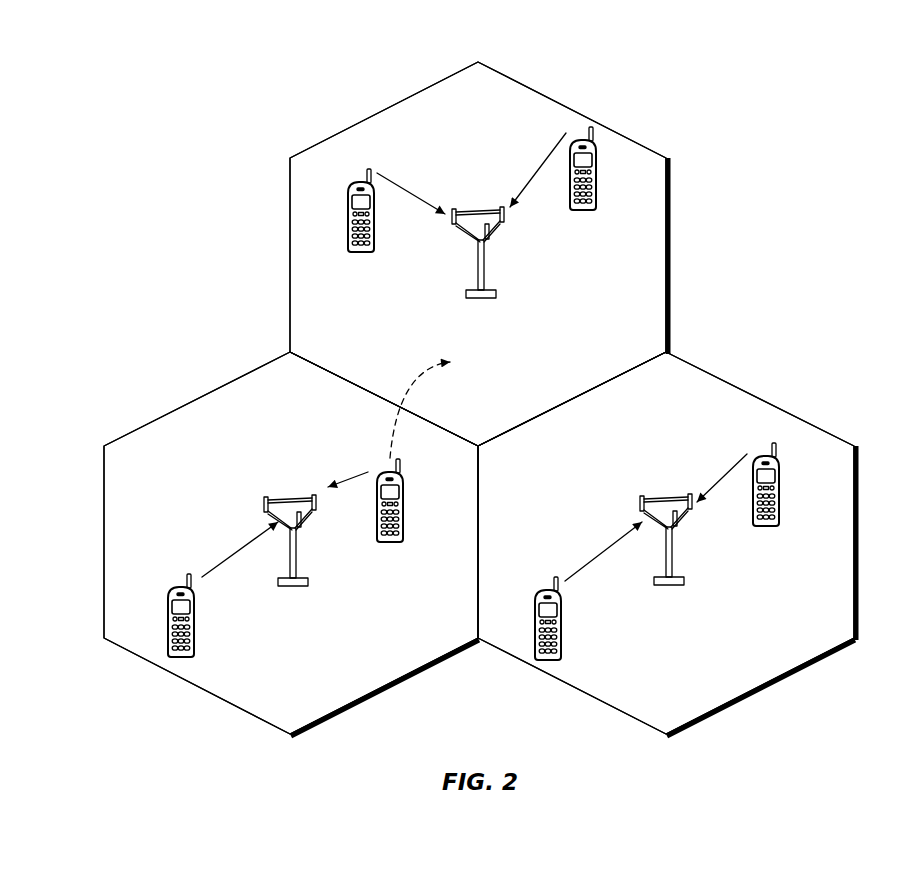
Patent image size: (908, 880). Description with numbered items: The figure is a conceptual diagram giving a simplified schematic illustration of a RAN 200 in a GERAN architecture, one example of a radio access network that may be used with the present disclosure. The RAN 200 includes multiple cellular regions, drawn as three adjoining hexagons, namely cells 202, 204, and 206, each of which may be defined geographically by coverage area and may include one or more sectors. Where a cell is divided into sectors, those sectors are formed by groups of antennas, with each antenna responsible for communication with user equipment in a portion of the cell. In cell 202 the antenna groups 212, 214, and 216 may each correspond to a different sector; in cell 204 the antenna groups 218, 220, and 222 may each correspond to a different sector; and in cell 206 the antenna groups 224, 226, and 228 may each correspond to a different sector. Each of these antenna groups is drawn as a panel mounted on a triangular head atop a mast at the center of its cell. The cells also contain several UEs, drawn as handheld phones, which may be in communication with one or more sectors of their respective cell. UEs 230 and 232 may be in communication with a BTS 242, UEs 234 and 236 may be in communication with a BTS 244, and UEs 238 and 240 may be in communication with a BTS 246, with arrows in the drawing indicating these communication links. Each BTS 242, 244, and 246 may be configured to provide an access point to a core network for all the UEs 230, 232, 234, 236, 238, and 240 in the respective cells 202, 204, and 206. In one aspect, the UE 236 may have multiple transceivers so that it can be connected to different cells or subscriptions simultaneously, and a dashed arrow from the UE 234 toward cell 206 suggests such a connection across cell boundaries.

The RAN 200 is at (768, 88).
The cell 202 is at (755, 396).
The cell 204 is at (175, 408).
The cell 206 is at (557, 101).
The antenna group 212 is at (639, 500).
The antenna group 214 is at (677, 529).
The antenna group 216 is at (692, 512).
The antenna group 218 is at (302, 529).
The antenna group 220 is at (318, 512).
The antenna group 222 is at (265, 501).
The antenna group 224 is at (453, 226).
The antenna group 226 is at (490, 240).
The antenna group 228 is at (505, 223).
The UE 230 is at (778, 480).
The UE 232 is at (537, 613).
The UE 234 is at (402, 494).
The UE 236 is at (170, 609).
The UE 238 is at (358, 252).
The UE 240 is at (585, 212).
The BTS 242 is at (668, 499).
The BTS 244 is at (293, 500).
The BTS 246 is at (481, 212).